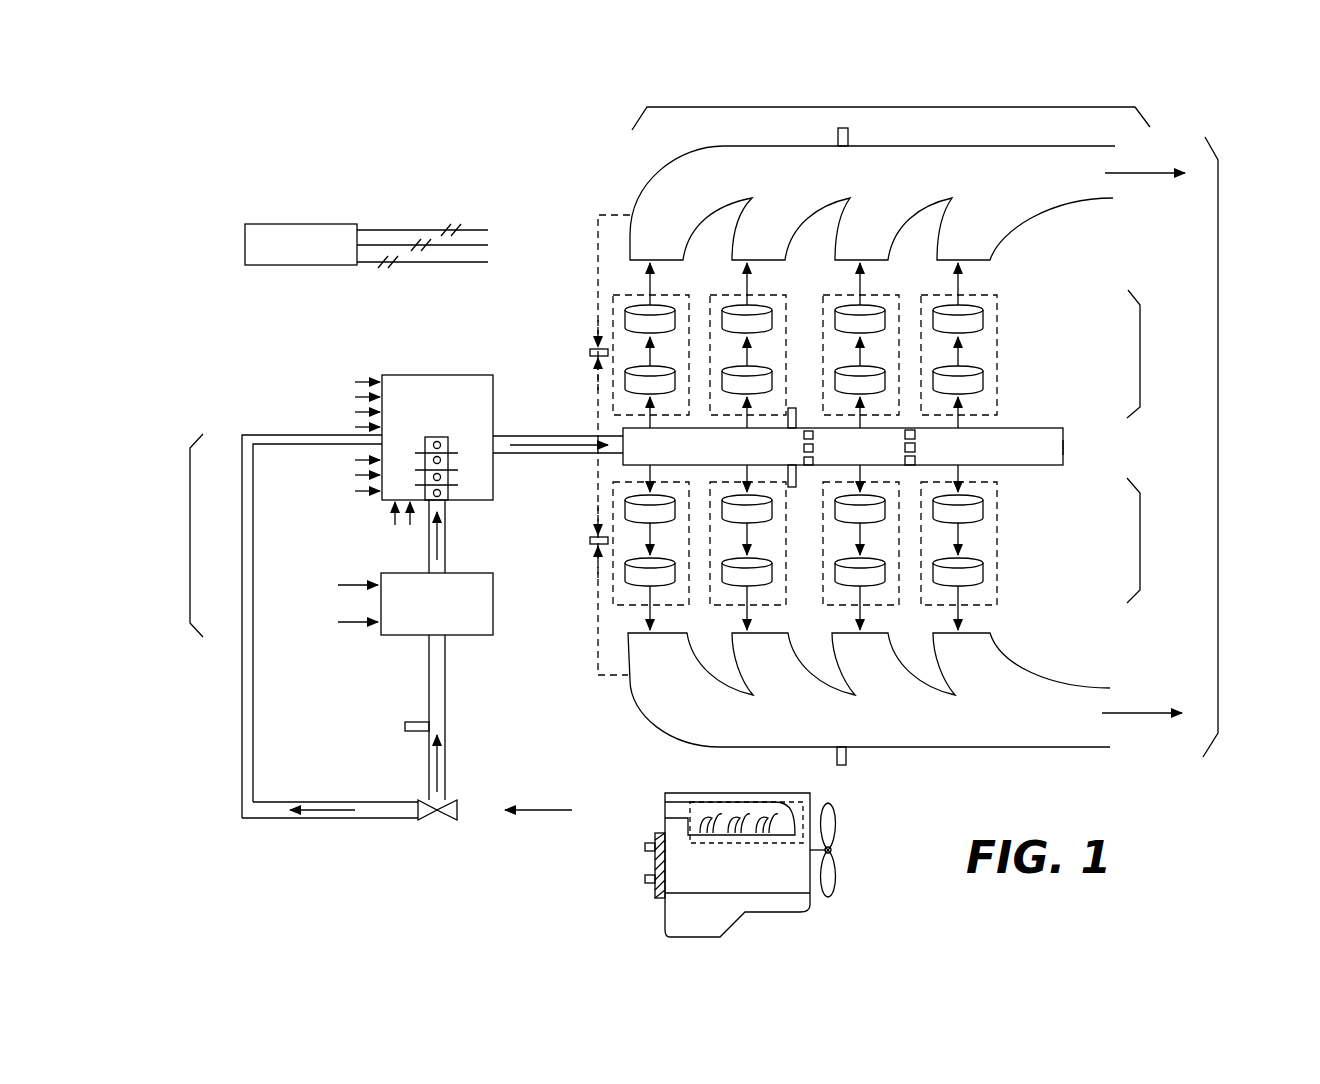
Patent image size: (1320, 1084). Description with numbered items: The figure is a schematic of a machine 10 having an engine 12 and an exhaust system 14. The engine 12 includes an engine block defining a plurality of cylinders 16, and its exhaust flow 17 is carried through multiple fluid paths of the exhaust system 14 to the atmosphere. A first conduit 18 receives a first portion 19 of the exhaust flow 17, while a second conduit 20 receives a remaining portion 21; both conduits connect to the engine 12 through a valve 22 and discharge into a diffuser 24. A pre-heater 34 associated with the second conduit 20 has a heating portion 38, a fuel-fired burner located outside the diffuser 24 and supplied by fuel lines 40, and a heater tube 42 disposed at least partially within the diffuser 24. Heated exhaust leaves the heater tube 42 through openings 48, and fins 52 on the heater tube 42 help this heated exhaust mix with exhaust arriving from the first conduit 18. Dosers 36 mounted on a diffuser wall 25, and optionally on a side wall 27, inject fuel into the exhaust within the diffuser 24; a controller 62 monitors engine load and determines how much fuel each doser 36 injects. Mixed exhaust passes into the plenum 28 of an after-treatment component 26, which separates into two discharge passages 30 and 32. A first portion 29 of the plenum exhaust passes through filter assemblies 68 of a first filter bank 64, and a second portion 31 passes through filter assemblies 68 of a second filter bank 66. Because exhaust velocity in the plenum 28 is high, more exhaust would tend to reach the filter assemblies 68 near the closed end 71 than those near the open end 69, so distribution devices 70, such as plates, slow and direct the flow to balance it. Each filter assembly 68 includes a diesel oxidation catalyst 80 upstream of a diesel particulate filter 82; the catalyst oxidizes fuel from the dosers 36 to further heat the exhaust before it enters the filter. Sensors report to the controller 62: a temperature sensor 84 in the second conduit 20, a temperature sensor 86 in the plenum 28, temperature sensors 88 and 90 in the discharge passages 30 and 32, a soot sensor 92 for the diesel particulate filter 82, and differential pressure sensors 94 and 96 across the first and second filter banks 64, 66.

The machine 10 is at (305, 170).
The engine 12 is at (740, 865).
The exhaust system 14 is at (1218, 290).
The cylinders 16 is at (728, 843).
The exhaust flow 17 is at (1150, 173).
The first conduit 18 is at (240, 760).
The first portion 19 is at (318, 812).
The second conduit 20 is at (445, 700).
The remaining portion 21 is at (445, 755).
The valve 22 is at (437, 818).
The diffuser 24 is at (412, 375).
The diffuser wall 25 is at (357, 414).
The after-treatment component 26 is at (840, 107).
The side wall 27 is at (422, 505).
The plenum 28 is at (1018, 428).
The first portion of exhaust 29 is at (653, 420).
The discharge passage 30 is at (885, 146).
The second portion of exhaust 31 is at (647, 474).
The discharge passage 32 is at (1055, 747).
The pre-heater 34 is at (190, 548).
The dosers 36 is at (356, 412).
The heating portion 38 is at (437, 604).
The fuel lines 40 is at (338, 585).
The heater tube 42 is at (437, 437).
The openings 48 is at (440, 477).
The fins 52 is at (493, 425).
The controller 62 is at (420, 250).
The first filter bank 64 is at (1140, 355).
The second filter bank 66 is at (1140, 545).
The filter assemblies 68 is at (672, 297).
The open end 69 is at (590, 434).
The distribution devices 70 is at (905, 428).
The closed end 71 is at (1063, 444).
The diesel oxidation catalyst 80 is at (804, 446).
The diesel particulate filter 82 is at (804, 446).
The temperature sensor 84 is at (405, 726).
The temperature sensor 86 is at (792, 408).
The temperature sensor 88 is at (838, 136).
The temperature sensor 90 is at (846, 757).
The soot sensor 92 is at (792, 487).
The differential pressure sensor 94 is at (590, 352).
The differential pressure sensor 96 is at (590, 540).